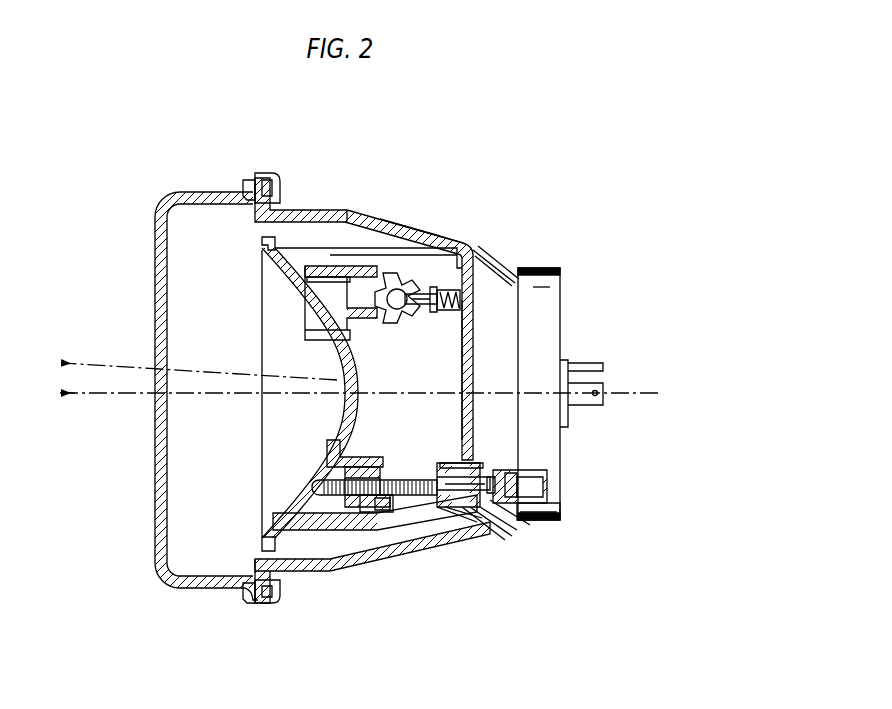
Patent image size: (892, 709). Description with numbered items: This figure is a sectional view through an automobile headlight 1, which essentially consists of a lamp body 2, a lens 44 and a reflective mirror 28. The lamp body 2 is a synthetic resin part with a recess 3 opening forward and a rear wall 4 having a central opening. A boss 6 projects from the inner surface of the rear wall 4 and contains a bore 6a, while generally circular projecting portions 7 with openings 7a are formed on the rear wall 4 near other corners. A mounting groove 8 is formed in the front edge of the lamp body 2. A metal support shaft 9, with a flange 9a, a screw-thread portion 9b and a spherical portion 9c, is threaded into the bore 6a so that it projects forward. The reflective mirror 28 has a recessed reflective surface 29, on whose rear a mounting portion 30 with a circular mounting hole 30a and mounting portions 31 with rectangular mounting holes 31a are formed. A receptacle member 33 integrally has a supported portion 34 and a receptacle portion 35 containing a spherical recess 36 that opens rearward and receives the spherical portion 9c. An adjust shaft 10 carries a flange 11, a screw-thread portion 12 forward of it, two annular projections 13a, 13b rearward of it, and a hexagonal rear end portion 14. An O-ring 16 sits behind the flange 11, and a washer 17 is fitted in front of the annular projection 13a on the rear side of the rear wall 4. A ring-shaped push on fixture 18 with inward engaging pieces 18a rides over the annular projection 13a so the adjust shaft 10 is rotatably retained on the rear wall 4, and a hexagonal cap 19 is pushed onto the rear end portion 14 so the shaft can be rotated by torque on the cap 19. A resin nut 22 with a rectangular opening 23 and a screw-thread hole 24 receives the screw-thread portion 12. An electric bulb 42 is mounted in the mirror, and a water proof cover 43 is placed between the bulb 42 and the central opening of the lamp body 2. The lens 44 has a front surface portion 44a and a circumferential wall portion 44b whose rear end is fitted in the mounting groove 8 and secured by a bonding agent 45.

The automobile headlight 1 is at (577, 125).
The lamp body 2 is at (398, 218).
The recess 3 is at (447, 245).
The rear wall 4 is at (466, 346).
The boss 6 is at (471, 244).
The bore 6a is at (468, 266).
The projecting portion 7 is at (447, 475).
The opening 7a is at (457, 462).
The mounting groove 8 is at (263, 175).
The support shaft 9 is at (440, 282).
The flange 9a is at (433, 313).
The screw-thread portion 9b is at (442, 305).
The spherical portion 9c is at (416, 258).
The adjust shaft 10 is at (312, 487).
The flange 11 is at (432, 524).
The screw-thread portion 12 is at (432, 476).
The annular projection 13a is at (491, 510).
The annular projection 13b is at (511, 505).
The rear end portion 14 is at (550, 488).
The O-ring 16 is at (460, 528).
The washer 17 is at (480, 530).
The push on fixture 18 is at (498, 525).
The engaging piece 18a is at (506, 530).
The cap 19 is at (548, 512).
The nut 22 is at (393, 512).
The opening 23 is at (340, 475).
The screw-thread hole 24 is at (380, 457).
The reflective mirror 28 is at (260, 260).
The reflective surface 29 is at (277, 287).
The mounting portion 30 is at (320, 266).
The mounting hole 30a is at (347, 265).
The mounting portion 31 is at (323, 532).
The mounting hole 31a is at (372, 568).
The receptacle member 33 is at (385, 264).
The supported portion 34 is at (335, 333).
The receptacle portion 35 is at (390, 325).
The spherical recess 36 is at (372, 300).
The electric bulb 42 is at (568, 418).
The water proof cover 43 is at (560, 466).
The lens 44 is at (165, 393).
The front surface portion 44a is at (150, 443).
The circumferential wall portion 44b is at (180, 190).
The bonding agent 45 is at (243, 185).